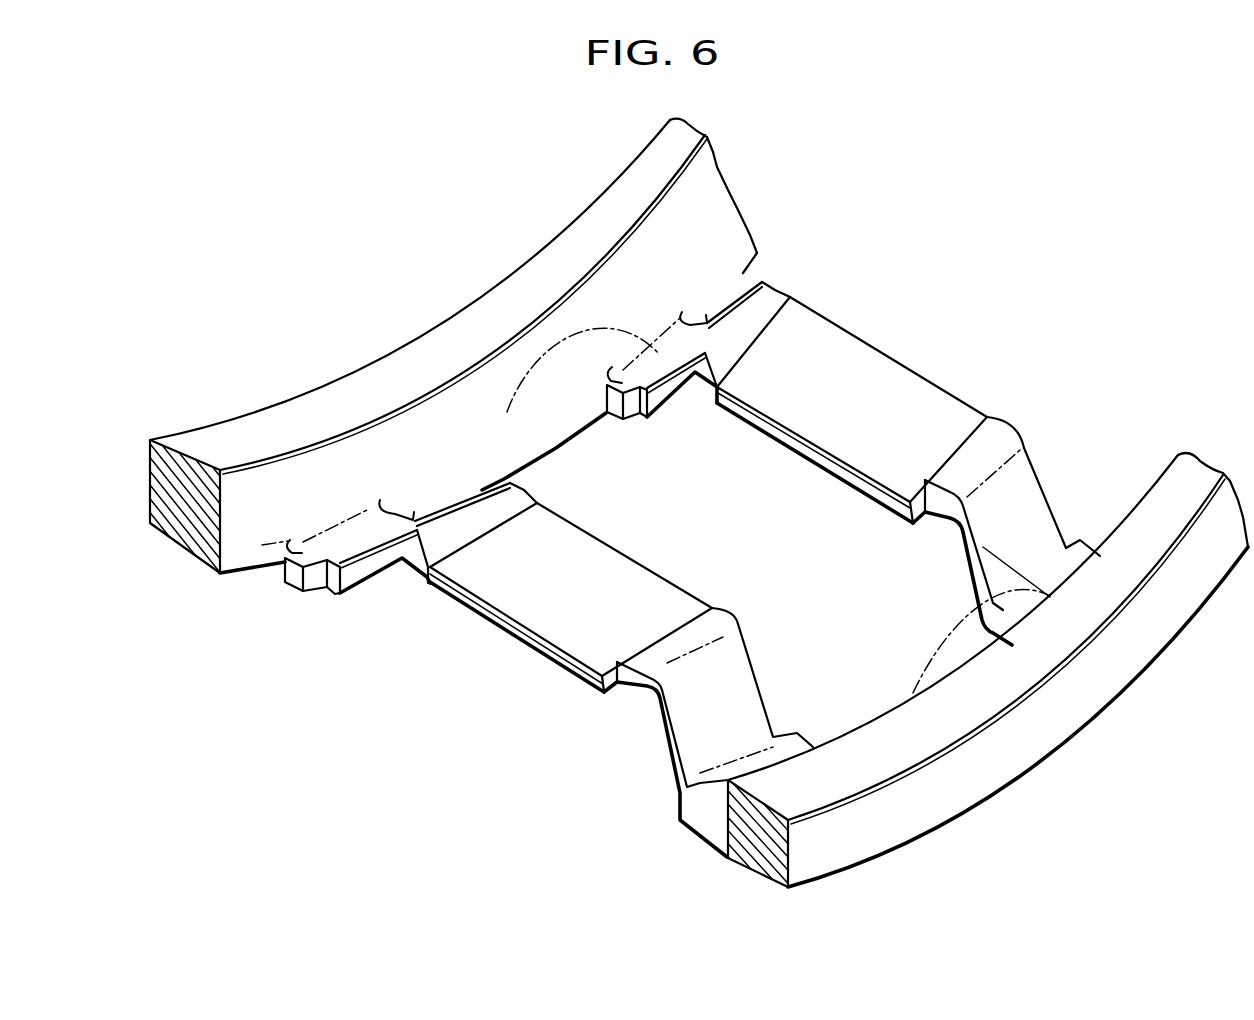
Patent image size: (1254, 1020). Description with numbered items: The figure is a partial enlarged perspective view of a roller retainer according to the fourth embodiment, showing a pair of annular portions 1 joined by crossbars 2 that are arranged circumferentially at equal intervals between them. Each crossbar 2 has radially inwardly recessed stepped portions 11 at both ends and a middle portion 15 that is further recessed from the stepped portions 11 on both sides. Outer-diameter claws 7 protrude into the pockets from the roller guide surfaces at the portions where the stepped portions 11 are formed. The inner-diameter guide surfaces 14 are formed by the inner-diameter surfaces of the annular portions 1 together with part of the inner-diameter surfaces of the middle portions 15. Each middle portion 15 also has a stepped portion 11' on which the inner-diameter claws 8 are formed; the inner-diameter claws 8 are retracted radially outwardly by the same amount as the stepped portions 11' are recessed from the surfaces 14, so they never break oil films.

The annular portion 1 is at (422, 256).
The crossbar 2 is at (571, 681).
The outer-diameter claw 7 is at (283, 566).
The inner-diameter claw 8 is at (527, 633).
The stepped portion 11 is at (549, 589).
The stepped portion 11' is at (852, 397).
The inner-diameter guide surface 14 is at (460, 520).
The middle portion 15 is at (1003, 443).